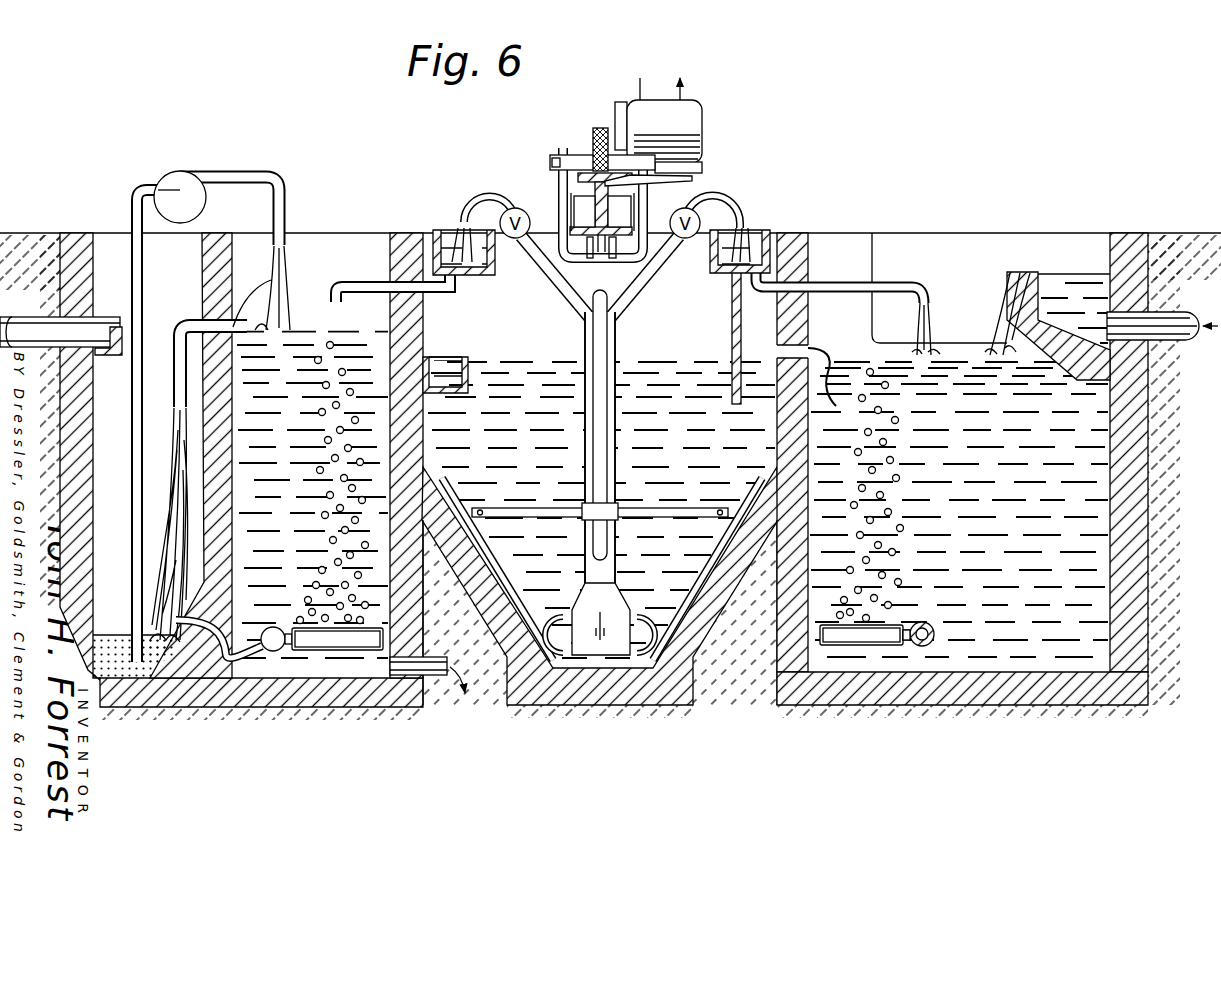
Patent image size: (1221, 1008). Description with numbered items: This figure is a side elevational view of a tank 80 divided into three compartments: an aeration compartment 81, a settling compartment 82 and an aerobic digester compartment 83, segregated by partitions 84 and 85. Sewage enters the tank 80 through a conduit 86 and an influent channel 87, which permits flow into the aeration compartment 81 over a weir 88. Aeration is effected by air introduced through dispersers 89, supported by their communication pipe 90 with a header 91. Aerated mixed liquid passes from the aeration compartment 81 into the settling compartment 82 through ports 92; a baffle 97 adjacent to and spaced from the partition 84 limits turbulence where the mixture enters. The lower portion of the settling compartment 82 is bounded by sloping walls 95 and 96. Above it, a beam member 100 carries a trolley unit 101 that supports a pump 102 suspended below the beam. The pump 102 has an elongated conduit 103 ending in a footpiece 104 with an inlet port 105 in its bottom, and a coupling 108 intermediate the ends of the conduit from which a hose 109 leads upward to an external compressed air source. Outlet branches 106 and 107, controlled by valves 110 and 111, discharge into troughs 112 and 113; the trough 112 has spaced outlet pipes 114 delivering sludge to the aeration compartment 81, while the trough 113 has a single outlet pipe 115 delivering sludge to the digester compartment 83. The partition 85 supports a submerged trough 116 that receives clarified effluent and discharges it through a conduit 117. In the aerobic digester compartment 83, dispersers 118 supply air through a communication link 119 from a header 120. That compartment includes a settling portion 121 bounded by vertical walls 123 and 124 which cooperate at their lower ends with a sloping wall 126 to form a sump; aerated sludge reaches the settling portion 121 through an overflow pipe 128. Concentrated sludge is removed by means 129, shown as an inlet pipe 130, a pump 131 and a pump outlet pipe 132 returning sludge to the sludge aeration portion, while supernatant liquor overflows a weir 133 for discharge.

The tank 80 is at (1152, 478).
The aeration compartment 81 is at (959, 509).
The settling compartment 82 is at (601, 510).
The aerobic digester compartment 83 is at (312, 495).
The partition 84 is at (808, 476).
The partition 85 is at (390, 507).
The conduit 86 is at (1180, 342).
The influent channel 87 is at (1075, 285).
The weir 88 is at (990, 266).
The dispersers 89 is at (890, 624).
The communication pipe 90 is at (910, 628).
The header 91 is at (935, 632).
The ports 92 is at (820, 382).
The sloping wall 95 is at (712, 615).
The sloping wall 96 is at (441, 673).
The baffle 97 is at (732, 314).
The beam member 100 is at (583, 174).
The trolley unit 101 is at (660, 200).
The pump 102 is at (582, 385).
The elongated conduit 103 is at (583, 427).
The footpiece 104 is at (590, 645).
The inlet port 105 is at (622, 662).
The outlet branch 106 is at (630, 316).
The outlet branch 107 is at (474, 192).
The coupling 108 is at (612, 555).
The hose 109 is at (608, 458).
The valve 110 is at (657, 277).
The valve 111 is at (540, 277).
The trough 112 is at (770, 238).
The trough 113 is at (432, 238).
The outlet pipes 114 is at (900, 285).
The outlet pipe 115 is at (368, 292).
The trough 116 is at (445, 393).
The conduit 117 is at (448, 370).
The dispersers 118 is at (305, 624).
The communication link 119 is at (292, 646).
The header 120 is at (268, 628).
The settling portion 121 is at (163, 535).
The vertical wall 123 is at (232, 458).
The vertical wall 124 is at (108, 243).
The sloping wall 126 is at (228, 667).
The overflow pipe 128 is at (281, 292).
The sludge removal means 129 is at (180, 171).
The inlet pipe 130 is at (22, 316).
The pump 131 is at (204, 209).
The pump outlet pipe 132 is at (286, 212).
The weir 133 is at (116, 327).